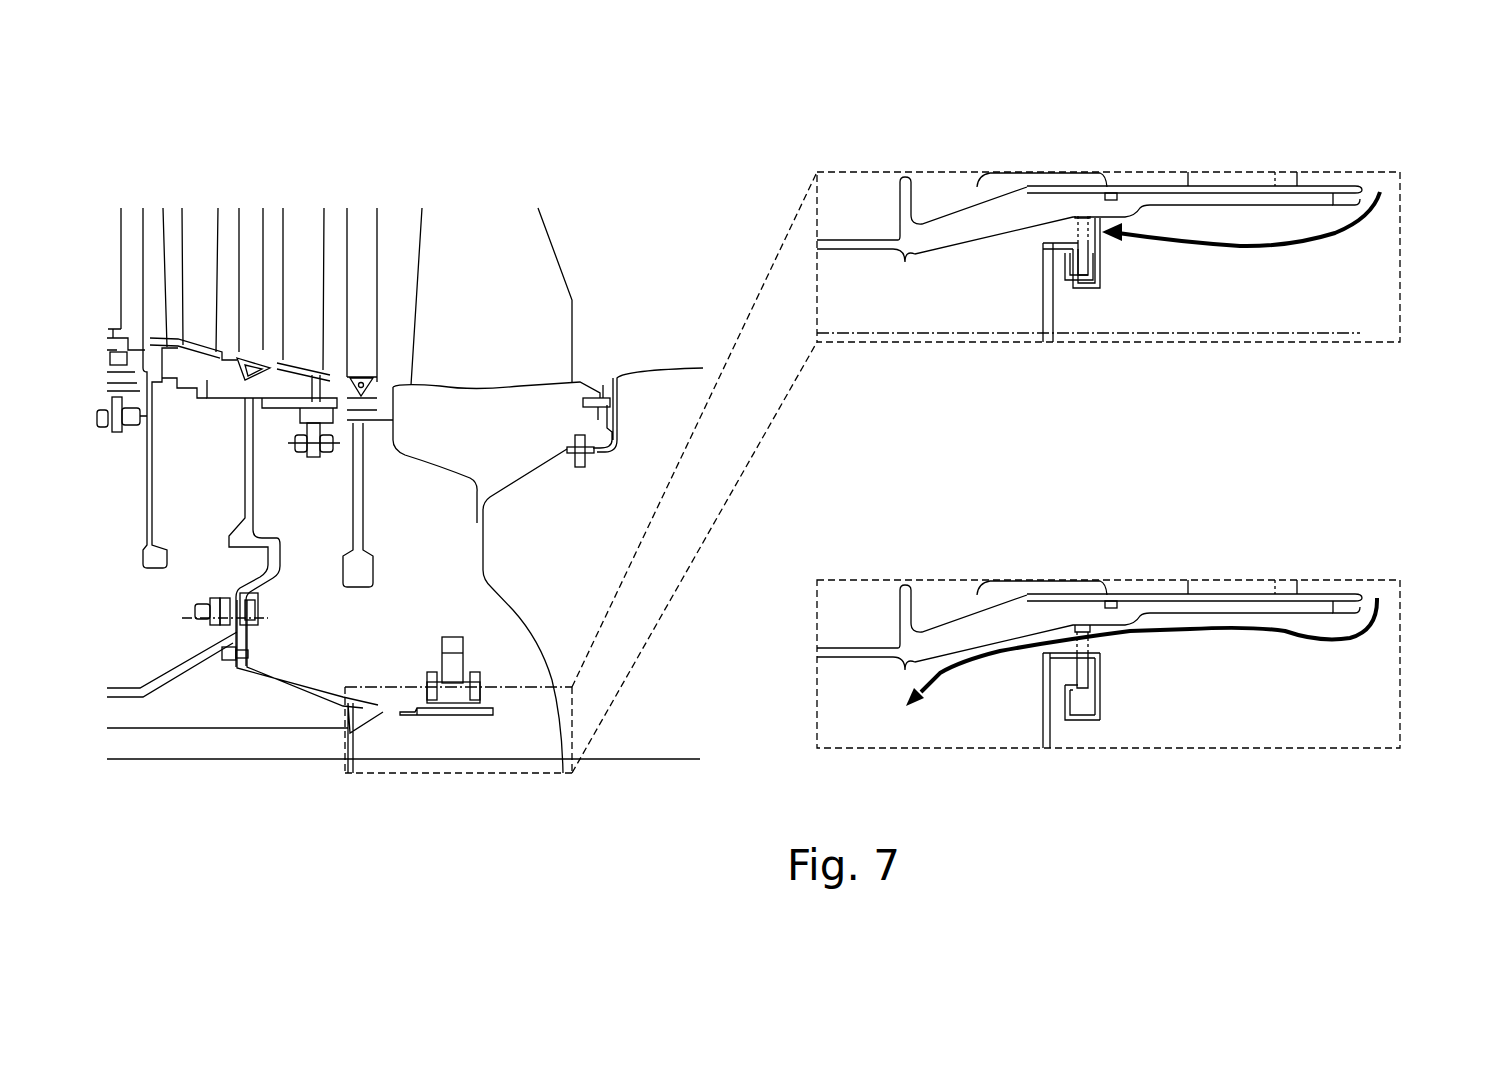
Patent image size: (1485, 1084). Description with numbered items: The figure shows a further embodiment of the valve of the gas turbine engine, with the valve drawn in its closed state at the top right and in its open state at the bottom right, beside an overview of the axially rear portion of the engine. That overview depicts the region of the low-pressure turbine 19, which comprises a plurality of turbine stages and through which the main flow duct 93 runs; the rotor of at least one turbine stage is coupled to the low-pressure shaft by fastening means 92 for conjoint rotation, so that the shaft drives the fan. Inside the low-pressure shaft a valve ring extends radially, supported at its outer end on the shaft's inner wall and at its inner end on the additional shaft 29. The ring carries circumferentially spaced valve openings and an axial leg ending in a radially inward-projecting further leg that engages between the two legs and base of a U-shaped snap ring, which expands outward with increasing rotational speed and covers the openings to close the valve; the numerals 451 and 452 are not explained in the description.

The low-pressure turbine 19 is at (265, 184).
The main flow duct 93 is at (410, 322).
The fastening means 92 is at (263, 618).
The additional shaft 29 is at (318, 762).
The first wall portion 451 is at (1067, 627).
The second wall portion 452 is at (1065, 712).